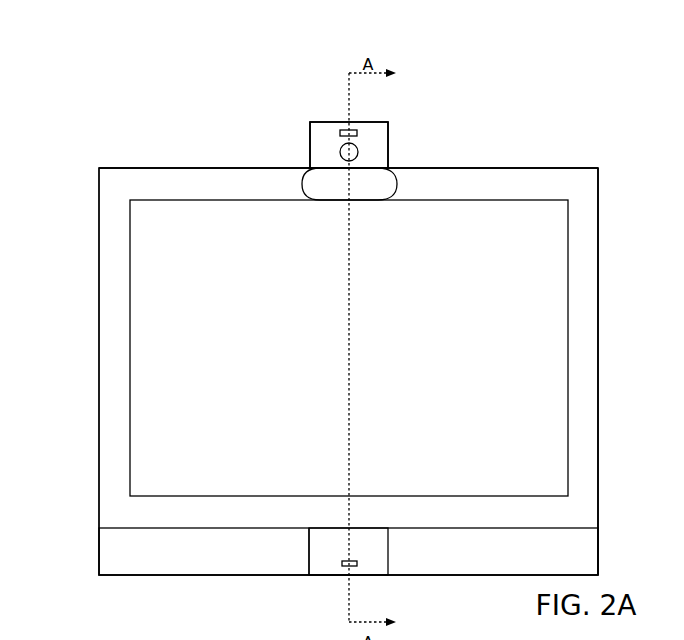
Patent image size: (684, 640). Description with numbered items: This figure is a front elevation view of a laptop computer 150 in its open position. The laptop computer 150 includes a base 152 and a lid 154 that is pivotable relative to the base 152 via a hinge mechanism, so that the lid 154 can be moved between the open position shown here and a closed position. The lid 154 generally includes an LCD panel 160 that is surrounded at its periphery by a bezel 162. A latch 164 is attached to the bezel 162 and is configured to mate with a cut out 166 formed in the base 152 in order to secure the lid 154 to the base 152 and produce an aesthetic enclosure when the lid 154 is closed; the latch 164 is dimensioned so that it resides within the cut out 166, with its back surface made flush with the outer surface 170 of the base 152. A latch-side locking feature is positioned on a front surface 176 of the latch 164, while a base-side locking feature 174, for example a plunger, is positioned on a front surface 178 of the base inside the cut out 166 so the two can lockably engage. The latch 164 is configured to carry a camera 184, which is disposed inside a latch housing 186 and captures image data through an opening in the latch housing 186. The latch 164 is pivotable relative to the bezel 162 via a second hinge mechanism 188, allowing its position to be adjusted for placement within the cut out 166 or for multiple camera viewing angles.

The laptop computer 150 is at (200, 130).
The base 152 is at (99, 551).
The lid 154 is at (526, 168).
The LCD panel 160 is at (474, 234).
The bezel 162 is at (599, 262).
The latch 164 is at (389, 132).
The cut out 166 is at (310, 562).
The outer surface 170 is at (120, 556).
The base-side locking feature 174 is at (339, 133).
The front surface 176 is at (321, 155).
The front surface 178 is at (324, 543).
The camera 184 is at (332, 160).
The latch housing 186 is at (372, 155).
The second hinge mechanism 188 is at (322, 190).